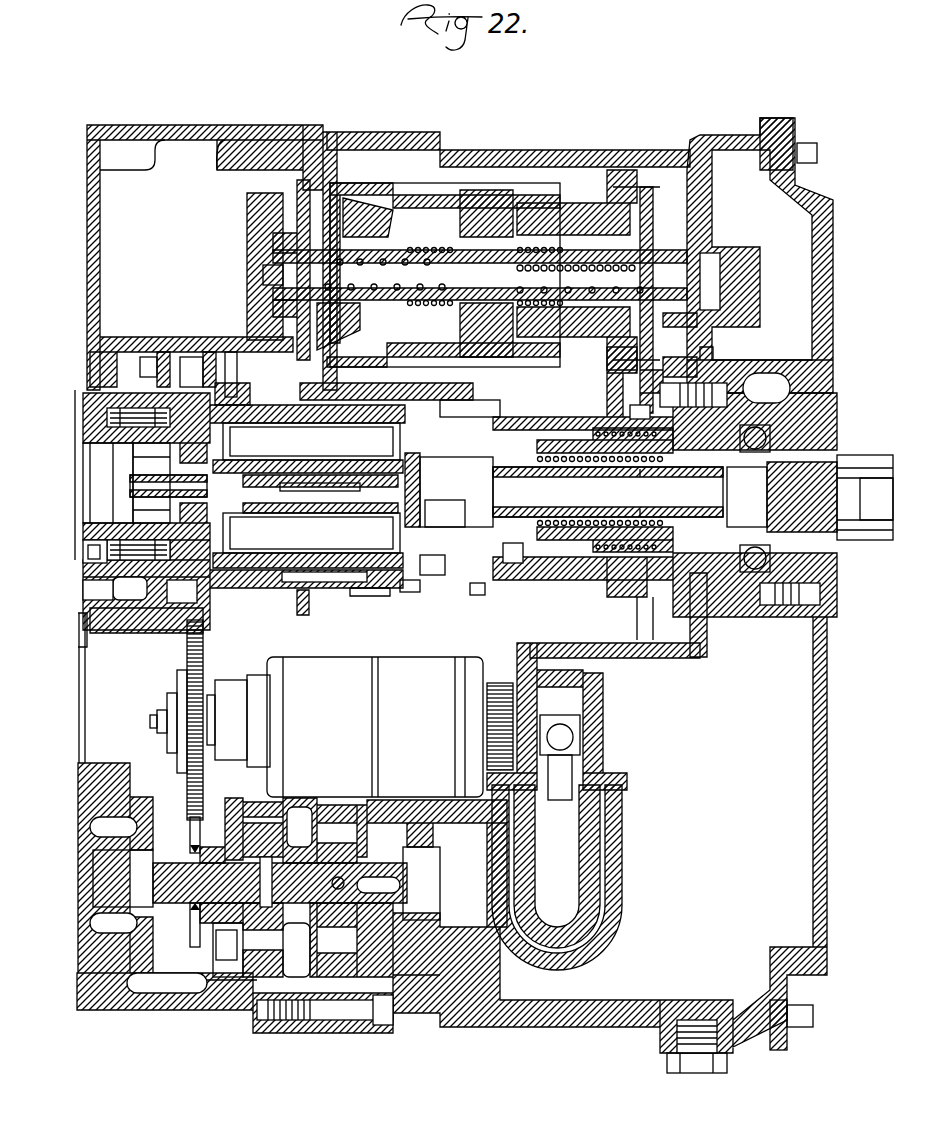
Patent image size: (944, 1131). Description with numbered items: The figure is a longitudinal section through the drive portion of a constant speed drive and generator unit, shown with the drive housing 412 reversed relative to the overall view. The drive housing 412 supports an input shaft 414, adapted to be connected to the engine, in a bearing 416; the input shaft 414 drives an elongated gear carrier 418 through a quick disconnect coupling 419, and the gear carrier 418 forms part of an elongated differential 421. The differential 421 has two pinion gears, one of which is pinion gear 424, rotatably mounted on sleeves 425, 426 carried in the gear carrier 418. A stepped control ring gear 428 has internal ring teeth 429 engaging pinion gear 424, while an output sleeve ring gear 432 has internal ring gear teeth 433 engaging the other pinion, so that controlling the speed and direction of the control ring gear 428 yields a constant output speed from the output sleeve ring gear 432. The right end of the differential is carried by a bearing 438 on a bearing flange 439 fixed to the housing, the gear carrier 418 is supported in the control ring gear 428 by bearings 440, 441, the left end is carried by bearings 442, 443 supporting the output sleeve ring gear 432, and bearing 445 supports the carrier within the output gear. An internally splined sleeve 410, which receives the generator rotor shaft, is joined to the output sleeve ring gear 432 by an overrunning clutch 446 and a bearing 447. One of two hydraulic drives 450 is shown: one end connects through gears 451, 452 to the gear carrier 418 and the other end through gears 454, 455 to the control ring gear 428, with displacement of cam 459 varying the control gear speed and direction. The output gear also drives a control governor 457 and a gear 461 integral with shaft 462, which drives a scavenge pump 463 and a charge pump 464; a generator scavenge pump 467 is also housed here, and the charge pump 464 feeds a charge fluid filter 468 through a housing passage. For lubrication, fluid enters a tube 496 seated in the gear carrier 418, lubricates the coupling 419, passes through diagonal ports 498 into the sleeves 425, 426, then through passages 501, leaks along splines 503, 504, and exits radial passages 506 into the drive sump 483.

The splined sleeve 410 is at (100, 460).
The drive housing 412 is at (540, 1003).
The input shaft 414 is at (862, 455).
The bearing 416 is at (757, 550).
The gear carrier 418 is at (454, 513).
The quick disconnect coupling 419 is at (668, 592).
The differential 421 is at (365, 602).
The pinion gear 424 is at (328, 585).
The sleeve 425 is at (311, 441).
The sleeve 426 is at (308, 540).
The control ring gear 428 is at (470, 402).
The internal ring teeth 429 is at (405, 593).
The output sleeve ring gear 432 is at (230, 385).
The internal ring gear teeth 433 is at (372, 393).
The bearing 438 is at (640, 396).
The bearing flange 439 is at (600, 442).
The bearing 440 is at (478, 590).
The bearing 441 is at (522, 570).
The bearing 442 is at (145, 360).
The bearing 443 is at (183, 360).
The bearing 445 is at (258, 398).
The overrunning clutch 446 is at (105, 410).
The bearing 447 is at (85, 552).
The hydraulic drive 450 is at (547, 183).
The gear 451 is at (330, 185).
The gear 452 is at (292, 612).
The gear 454 is at (650, 200).
The gear 455 is at (712, 383).
The control governor 457 is at (437, 678).
The cam 459 is at (372, 213).
The gear 461 is at (192, 945).
The shaft 462 is at (226, 875).
The scavenge pump 463 is at (273, 980).
The charge pump 464 is at (358, 976).
The generator scavenge pump 467 is at (144, 981).
The charge fluid filter 468 is at (608, 856).
The drive sump 483 is at (213, 990).
The tube 496 is at (135, 490).
The diagonal ports 498 is at (316, 507).
The passages 501 is at (449, 490).
The spline 503 is at (608, 492).
The spline 504 is at (680, 485).
The radial passages 506 is at (747, 497).